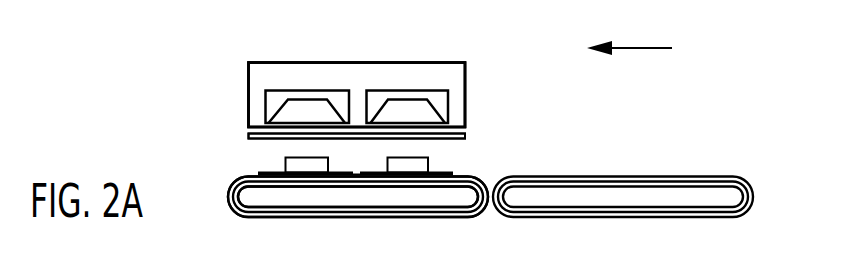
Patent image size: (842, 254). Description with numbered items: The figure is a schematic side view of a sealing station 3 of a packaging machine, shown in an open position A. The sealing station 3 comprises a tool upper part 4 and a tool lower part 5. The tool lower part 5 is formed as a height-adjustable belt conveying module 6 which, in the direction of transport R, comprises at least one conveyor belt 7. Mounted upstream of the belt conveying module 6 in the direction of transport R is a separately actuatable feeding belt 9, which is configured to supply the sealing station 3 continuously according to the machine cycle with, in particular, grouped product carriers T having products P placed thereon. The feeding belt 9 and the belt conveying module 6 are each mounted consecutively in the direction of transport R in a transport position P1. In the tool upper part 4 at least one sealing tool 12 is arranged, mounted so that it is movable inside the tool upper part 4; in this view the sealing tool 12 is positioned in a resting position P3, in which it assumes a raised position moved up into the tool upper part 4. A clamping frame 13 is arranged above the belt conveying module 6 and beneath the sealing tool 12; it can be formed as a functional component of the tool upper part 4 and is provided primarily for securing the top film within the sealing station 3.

The sealing station 3 is at (480, 52).
The tool upper part 4 is at (343, 75).
The resting position P3 is at (414, 74).
The sealing tool 12 is at (444, 103).
The clamping frame 13 is at (466, 137).
The open position A is at (238, 125).
The tool lower part 5 is at (228, 230).
The conveyor belt 7 is at (243, 178).
The belt conveying module 6 is at (435, 198).
The product carrier T is at (450, 173).
The product P is at (405, 168).
The feeding belt 9 is at (713, 192).
The transport position P1 is at (484, 225).
The direction of transport R is at (629, 36).